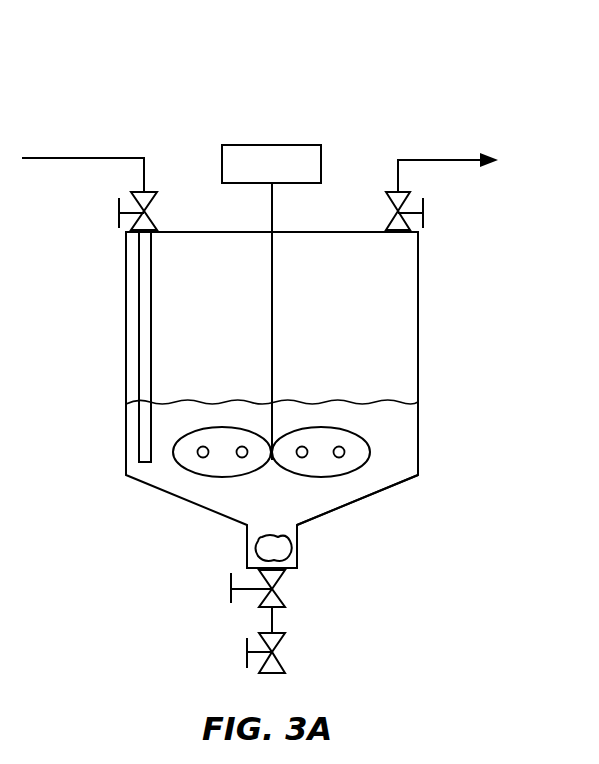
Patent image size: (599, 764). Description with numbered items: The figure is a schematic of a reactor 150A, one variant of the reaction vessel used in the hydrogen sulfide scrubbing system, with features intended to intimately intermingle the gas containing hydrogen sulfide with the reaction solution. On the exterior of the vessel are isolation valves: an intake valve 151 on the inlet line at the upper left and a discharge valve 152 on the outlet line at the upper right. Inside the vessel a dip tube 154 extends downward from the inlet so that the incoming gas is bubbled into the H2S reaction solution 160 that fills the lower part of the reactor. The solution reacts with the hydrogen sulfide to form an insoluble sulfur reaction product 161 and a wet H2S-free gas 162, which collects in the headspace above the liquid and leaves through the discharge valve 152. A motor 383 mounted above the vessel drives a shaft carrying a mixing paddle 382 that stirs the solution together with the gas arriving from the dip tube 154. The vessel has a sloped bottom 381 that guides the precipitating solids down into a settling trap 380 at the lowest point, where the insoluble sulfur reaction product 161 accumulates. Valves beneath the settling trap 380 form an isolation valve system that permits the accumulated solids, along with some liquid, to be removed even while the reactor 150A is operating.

The reactor 150A is at (158, 46).
The intake valve 151 is at (119, 214).
The discharge valve 152 is at (425, 216).
The dip tube 154 is at (139, 346).
The H2S reaction solution 160 is at (420, 440).
The insoluble sulfur reaction product 161 is at (283, 551).
The wet H2S-free gas 162 is at (408, 312).
The settling trap 380 is at (247, 533).
The sloped bottom 381 is at (355, 503).
The mixing paddle 382 is at (324, 427).
The motor 383 is at (297, 145).